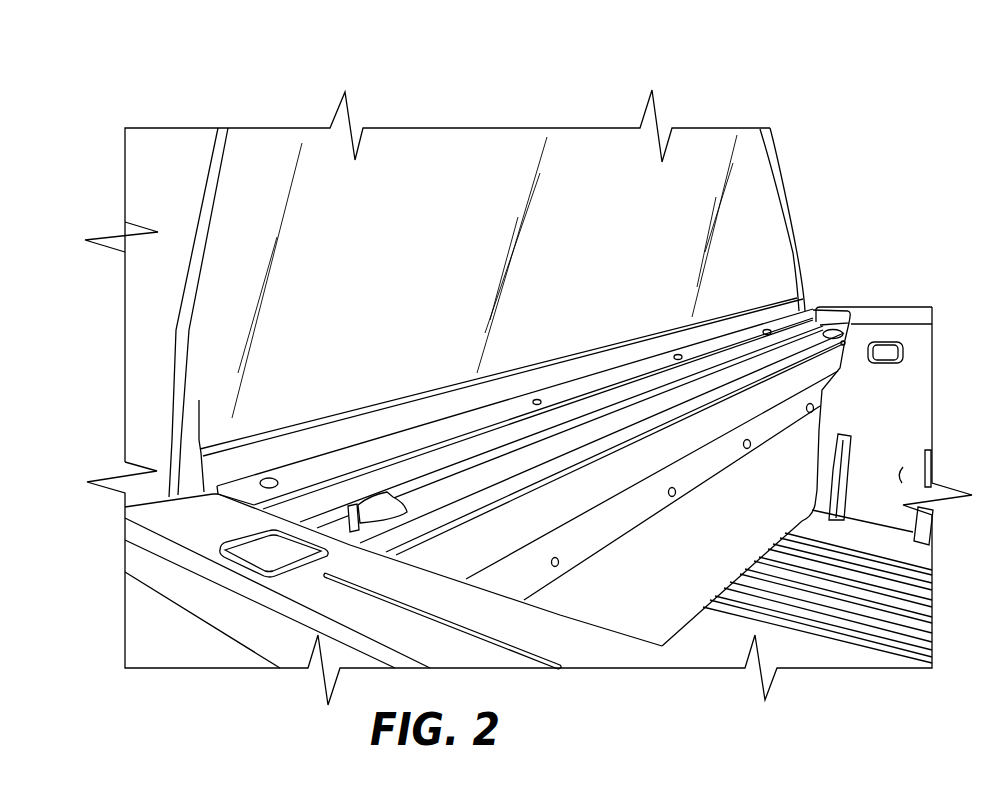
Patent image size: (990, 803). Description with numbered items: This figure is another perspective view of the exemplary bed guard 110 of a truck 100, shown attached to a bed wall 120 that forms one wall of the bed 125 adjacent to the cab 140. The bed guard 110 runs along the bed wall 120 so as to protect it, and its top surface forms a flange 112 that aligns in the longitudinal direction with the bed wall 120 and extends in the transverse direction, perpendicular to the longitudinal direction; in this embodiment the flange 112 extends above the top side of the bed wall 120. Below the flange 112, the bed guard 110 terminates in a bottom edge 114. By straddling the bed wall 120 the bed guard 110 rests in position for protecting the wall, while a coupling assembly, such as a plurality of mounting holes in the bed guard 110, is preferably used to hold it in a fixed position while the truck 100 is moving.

The truck 100 is at (140, 90).
The bed guard 110 is at (623, 483).
The flange 112 is at (305, 475).
The bottom edge 114 is at (732, 458).
The bed wall 120 is at (640, 607).
The bed 125 is at (893, 425).
The cab 140 is at (758, 233).